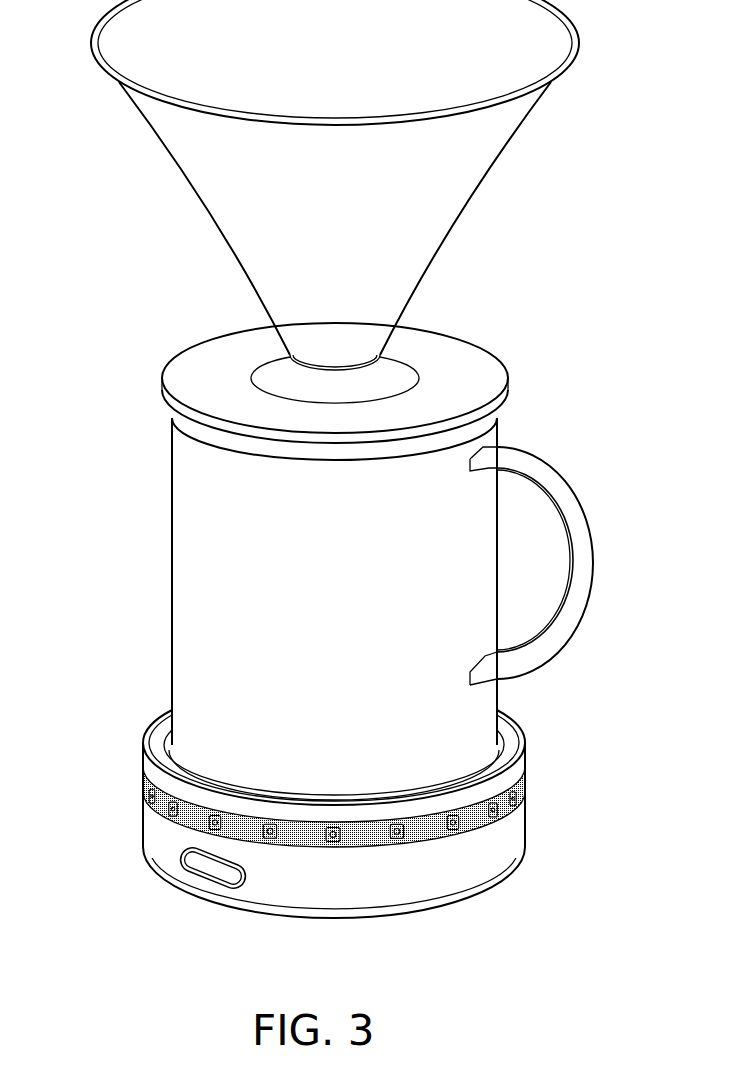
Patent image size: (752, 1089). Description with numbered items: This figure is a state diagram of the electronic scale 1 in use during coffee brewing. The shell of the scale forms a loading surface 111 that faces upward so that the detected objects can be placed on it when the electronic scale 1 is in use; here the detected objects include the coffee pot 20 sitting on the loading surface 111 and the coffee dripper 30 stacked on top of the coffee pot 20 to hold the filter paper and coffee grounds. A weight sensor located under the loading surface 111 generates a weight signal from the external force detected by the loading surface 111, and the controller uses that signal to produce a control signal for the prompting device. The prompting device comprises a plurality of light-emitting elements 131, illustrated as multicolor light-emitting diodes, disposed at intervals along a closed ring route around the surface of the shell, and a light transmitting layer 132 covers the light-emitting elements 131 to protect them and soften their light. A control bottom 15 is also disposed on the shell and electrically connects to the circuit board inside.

The electronic scale 1 is at (122, 829).
The control bottom 15 is at (210, 870).
The coffee pot 20 is at (172, 507).
The coffee dripper 30 is at (190, 184).
The loading surface 111 is at (502, 743).
The light-emitting elements 131 is at (525, 808).
The light transmitting layer 132 is at (485, 830).